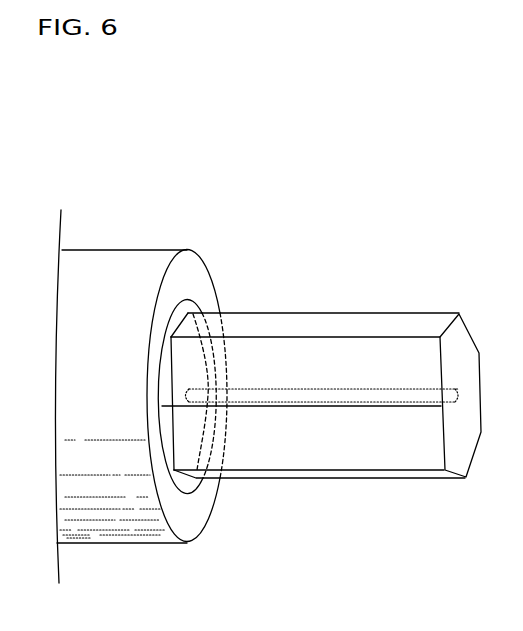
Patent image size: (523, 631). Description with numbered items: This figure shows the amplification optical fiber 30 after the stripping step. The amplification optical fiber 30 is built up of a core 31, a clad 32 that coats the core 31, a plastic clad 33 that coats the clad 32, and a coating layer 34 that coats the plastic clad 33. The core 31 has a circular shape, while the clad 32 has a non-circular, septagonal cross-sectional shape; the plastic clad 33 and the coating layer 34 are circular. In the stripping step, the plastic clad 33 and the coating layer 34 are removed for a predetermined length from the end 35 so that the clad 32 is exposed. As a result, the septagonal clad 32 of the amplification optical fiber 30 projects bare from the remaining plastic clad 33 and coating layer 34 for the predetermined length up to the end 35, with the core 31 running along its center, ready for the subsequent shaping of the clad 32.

The amplification optical fiber 30 is at (292, 150).
The core 31 is at (378, 395).
The clad 32 is at (238, 318).
The plastic clad 33 is at (188, 298).
The coating layer 34 is at (103, 268).
The end 35 is at (450, 453).